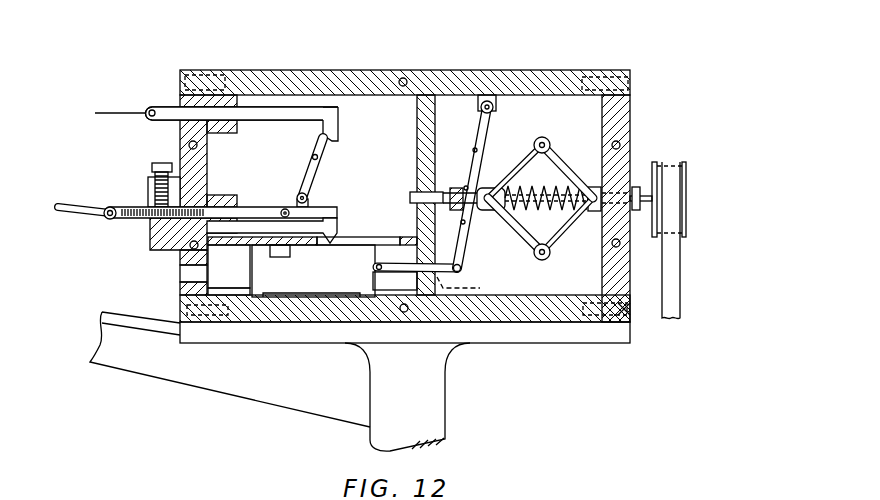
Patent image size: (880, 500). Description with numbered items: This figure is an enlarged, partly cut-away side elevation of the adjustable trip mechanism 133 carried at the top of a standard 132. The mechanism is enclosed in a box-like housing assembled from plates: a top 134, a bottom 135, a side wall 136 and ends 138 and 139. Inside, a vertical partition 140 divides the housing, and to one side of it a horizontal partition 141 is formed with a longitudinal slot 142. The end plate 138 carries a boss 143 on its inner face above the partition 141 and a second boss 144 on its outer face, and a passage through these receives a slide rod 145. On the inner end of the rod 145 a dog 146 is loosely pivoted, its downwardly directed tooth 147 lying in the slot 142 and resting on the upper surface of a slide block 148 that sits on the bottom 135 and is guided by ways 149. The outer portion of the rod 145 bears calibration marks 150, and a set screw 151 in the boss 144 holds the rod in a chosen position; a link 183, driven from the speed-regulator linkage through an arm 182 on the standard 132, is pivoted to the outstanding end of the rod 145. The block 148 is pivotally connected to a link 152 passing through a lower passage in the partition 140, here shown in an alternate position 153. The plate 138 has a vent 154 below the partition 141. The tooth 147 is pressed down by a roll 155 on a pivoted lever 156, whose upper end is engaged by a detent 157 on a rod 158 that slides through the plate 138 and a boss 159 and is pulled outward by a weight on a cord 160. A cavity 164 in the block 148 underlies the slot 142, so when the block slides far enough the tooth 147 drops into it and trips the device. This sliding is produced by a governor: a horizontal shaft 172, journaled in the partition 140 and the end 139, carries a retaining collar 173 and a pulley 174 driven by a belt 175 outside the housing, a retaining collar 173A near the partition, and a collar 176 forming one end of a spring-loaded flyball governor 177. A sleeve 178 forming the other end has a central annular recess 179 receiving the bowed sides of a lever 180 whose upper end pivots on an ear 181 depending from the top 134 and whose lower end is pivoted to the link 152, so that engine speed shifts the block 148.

The standard 132 is at (417, 395).
The trip mechanism 133 is at (493, 62).
The top 134 is at (297, 83).
The bottom 135 is at (535, 325).
The side wall 136 is at (373, 115).
The end 138 is at (180, 130).
The end 139 is at (631, 127).
The vertical partition 140 is at (426, 107).
The horizontal partition 141 is at (238, 246).
The longitudinal slot 142 is at (368, 237).
The boss 143 is at (223, 196).
The second boss 144 is at (157, 233).
The slide rod 145 is at (147, 222).
The dog 146 is at (322, 198).
The tooth 147 is at (333, 222).
The slide block 148 is at (315, 280).
The ways 149 is at (247, 293).
The calibration marks 150 is at (130, 208).
The set screw 151 is at (160, 163).
The link 152 is at (462, 274).
The link alternate position 153 is at (470, 288).
The vent 154 is at (183, 277).
The roll 155 is at (300, 193).
The lever 156 is at (313, 172).
The detent 157 is at (333, 123).
The rod 158 is at (167, 112).
The boss 159 is at (236, 127).
The cord 160 is at (122, 113).
The cavity 164 is at (290, 252).
The horizontal shaft 172 is at (543, 208).
The retaining collar 173 is at (636, 212).
The retaining collar 173A is at (442, 190).
The pulley 174 is at (686, 186).
The belt 175 is at (672, 273).
The collar 176 is at (595, 212).
The flyball governor 177 is at (556, 158).
The sleeve 178 is at (488, 212).
The central annular recess 179 is at (463, 188).
The lever 180 is at (478, 138).
The ear 181 is at (496, 103).
The arm 182 is at (157, 367).
The link 183 is at (68, 214).